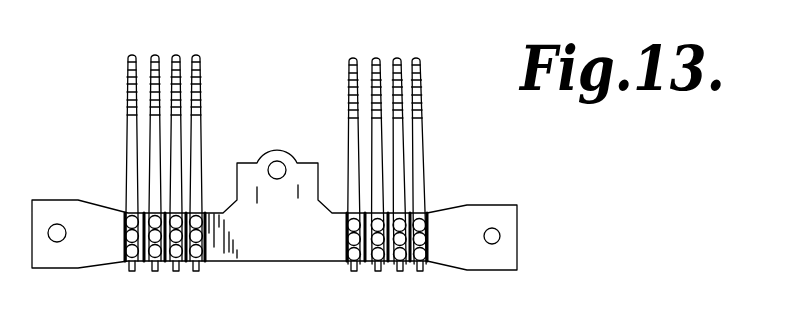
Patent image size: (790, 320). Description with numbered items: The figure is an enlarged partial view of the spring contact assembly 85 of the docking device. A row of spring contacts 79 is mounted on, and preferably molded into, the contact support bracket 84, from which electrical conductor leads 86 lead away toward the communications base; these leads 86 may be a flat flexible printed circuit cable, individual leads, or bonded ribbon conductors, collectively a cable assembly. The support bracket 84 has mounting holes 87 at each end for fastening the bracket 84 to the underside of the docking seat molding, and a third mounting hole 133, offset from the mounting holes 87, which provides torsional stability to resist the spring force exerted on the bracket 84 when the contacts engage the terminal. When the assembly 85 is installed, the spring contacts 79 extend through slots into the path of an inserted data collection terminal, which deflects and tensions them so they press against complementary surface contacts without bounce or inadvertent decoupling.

The spring contacts 79 is at (178, 40).
The contact support bracket 84 is at (441, 211).
The spring contact assembly 85 is at (433, 157).
The electrical conductor leads 86 is at (160, 277).
The mounting holes 87 is at (59, 224).
The third mounting hole 133 is at (280, 168).